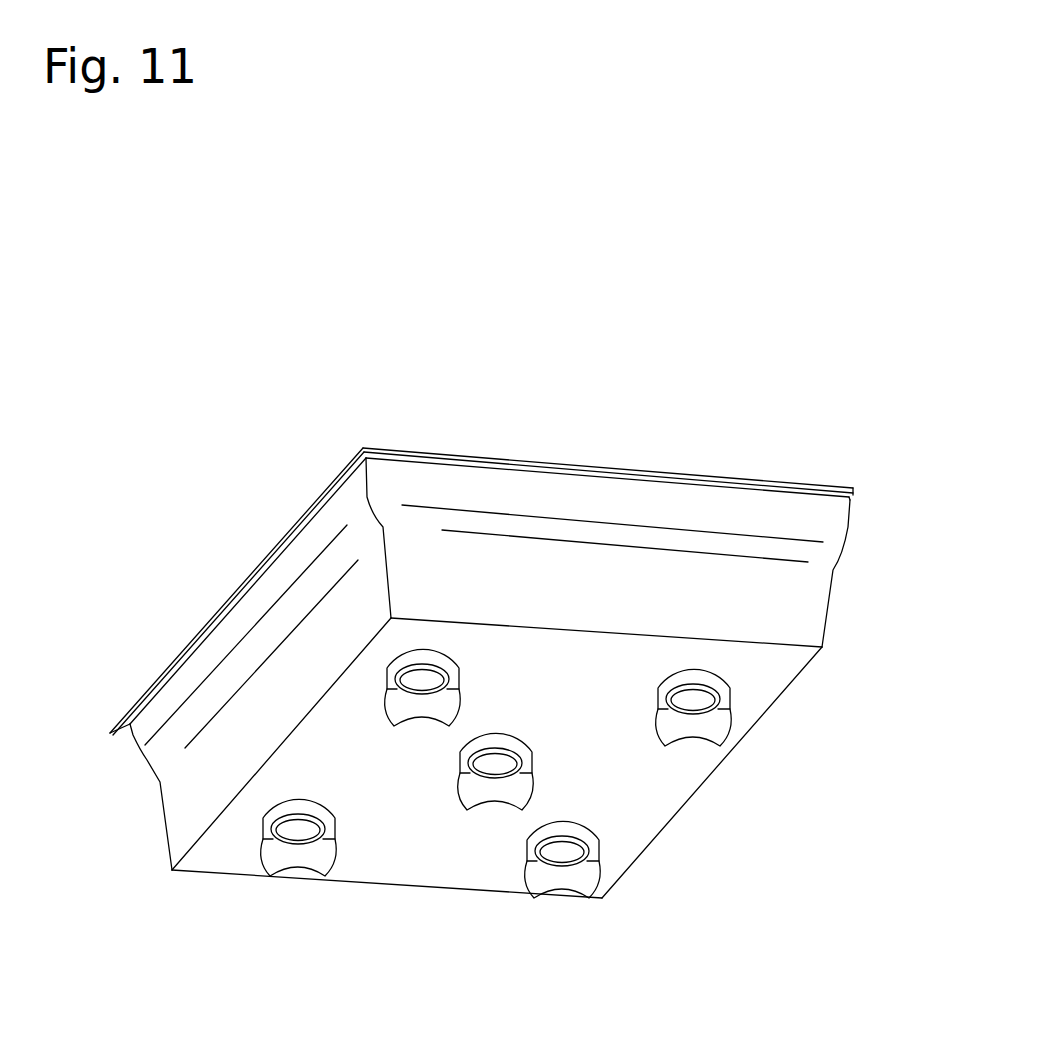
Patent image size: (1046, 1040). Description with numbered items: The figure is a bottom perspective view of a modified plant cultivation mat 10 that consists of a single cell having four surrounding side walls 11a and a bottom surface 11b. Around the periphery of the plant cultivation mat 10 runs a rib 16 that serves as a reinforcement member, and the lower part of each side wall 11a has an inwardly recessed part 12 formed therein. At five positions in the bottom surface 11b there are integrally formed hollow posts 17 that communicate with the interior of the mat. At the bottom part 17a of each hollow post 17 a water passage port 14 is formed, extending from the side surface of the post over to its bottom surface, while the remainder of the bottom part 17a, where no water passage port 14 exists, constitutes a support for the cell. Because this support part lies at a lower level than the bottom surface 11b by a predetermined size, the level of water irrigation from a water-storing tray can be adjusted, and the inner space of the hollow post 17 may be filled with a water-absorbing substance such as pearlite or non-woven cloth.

The plant cultivation mat 10 is at (258, 556).
The side wall 11a is at (198, 795).
The bottom surface 11b is at (458, 878).
The inwardly recessed part 12 is at (780, 603).
The water passage port 14 is at (697, 700).
The rib 16 is at (617, 468).
The hollow post 17 is at (585, 878).
The bottom part of hollow post 17a is at (302, 860).